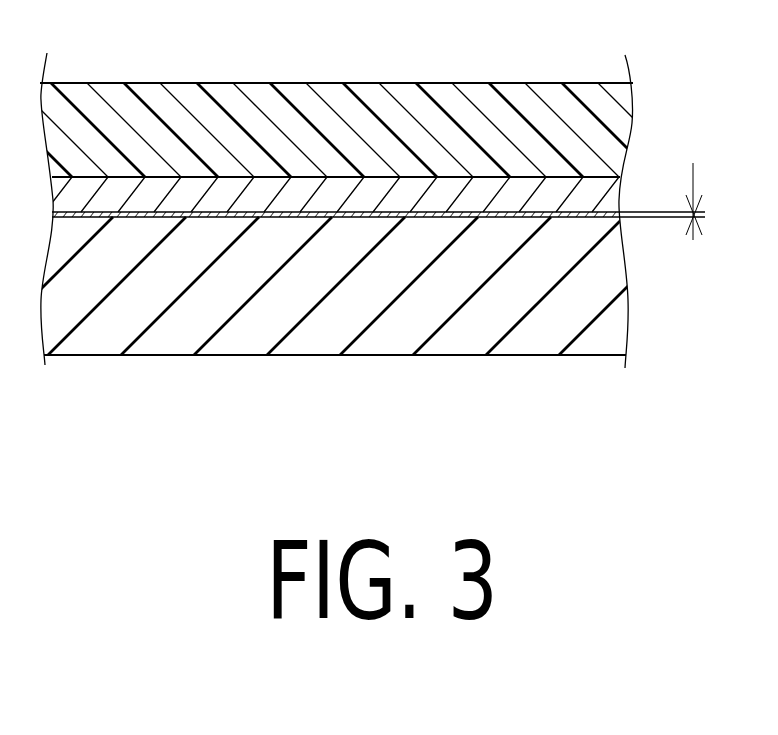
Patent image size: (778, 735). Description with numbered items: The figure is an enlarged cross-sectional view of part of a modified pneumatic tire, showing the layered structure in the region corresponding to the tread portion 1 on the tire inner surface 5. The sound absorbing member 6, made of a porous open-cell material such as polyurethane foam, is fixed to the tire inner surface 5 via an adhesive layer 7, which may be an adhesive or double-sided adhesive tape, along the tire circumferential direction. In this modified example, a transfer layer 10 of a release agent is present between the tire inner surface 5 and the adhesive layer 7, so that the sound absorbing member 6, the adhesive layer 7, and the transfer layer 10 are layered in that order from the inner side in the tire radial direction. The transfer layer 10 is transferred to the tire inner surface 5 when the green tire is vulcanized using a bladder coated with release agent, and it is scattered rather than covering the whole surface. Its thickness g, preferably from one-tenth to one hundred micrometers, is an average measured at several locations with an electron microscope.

The tread portion 1 is at (213, 357).
The tire inner surface 5 is at (487, 212).
The sound absorbing member 6 is at (222, 140).
The adhesive layer 7 is at (333, 193).
The transfer layer of release agent 10 is at (436, 215).
The thickness of release agent transfer layer g is at (708, 201).